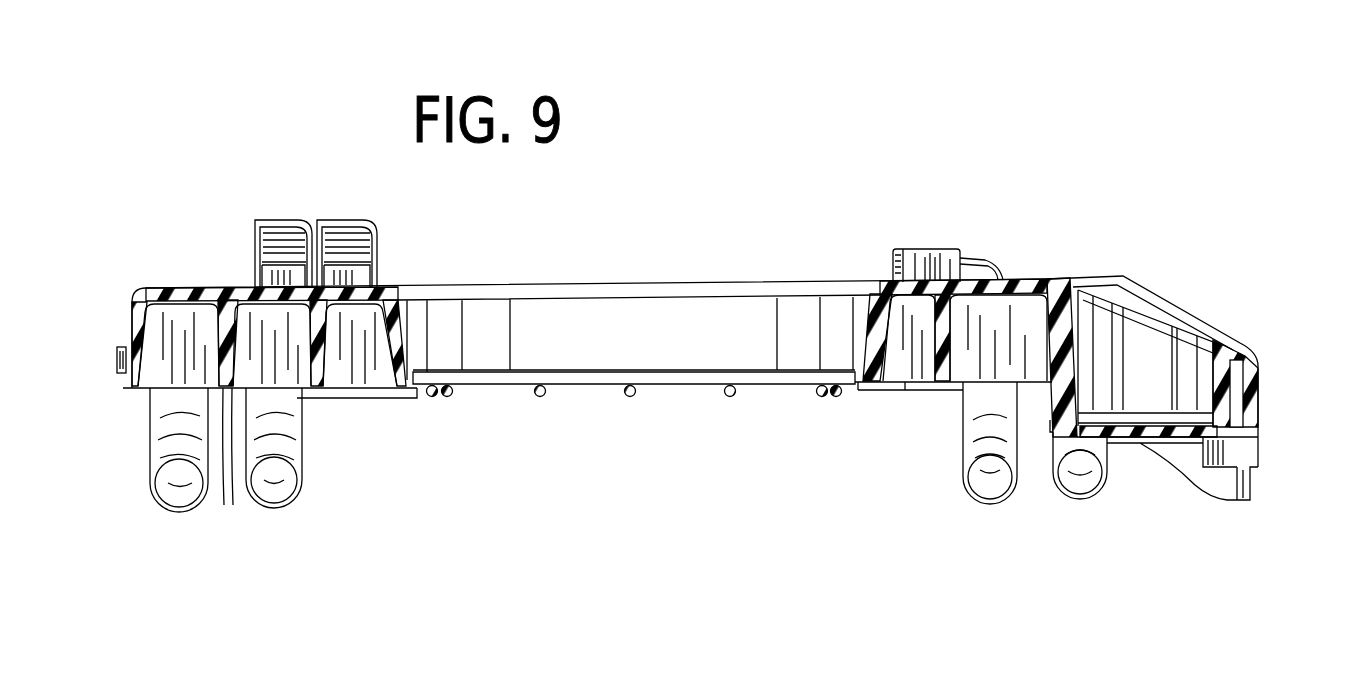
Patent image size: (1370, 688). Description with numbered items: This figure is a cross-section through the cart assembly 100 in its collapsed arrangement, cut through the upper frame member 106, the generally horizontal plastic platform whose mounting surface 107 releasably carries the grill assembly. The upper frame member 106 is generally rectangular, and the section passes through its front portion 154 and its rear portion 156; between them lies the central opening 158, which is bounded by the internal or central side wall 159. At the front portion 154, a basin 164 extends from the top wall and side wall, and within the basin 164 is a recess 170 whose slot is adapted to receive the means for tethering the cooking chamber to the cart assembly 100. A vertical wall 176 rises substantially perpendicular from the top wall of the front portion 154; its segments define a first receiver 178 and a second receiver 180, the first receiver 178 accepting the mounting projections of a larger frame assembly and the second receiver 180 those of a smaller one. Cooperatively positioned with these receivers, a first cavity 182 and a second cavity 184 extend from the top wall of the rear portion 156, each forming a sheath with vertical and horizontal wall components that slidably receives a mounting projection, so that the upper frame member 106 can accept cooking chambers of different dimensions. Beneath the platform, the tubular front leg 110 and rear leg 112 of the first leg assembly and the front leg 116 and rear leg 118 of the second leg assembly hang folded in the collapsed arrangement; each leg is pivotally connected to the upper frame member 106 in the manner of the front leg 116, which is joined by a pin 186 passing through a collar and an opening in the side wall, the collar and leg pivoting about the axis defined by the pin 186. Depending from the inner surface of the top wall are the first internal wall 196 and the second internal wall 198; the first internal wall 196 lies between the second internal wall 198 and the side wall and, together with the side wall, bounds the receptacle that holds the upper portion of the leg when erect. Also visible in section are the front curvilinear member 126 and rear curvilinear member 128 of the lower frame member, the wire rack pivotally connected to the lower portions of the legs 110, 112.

The cart assembly 100 is at (1108, 130).
The upper frame member 106 is at (648, 387).
The mounting surface 107 is at (212, 290).
The front leg 110 is at (1007, 425).
The rear leg 112 is at (282, 477).
The front leg 116 is at (1087, 483).
The rear leg 118 is at (182, 480).
The front curvilinear member 126 is at (847, 392).
The rear curvilinear member 128 is at (390, 398).
The front portion 154 is at (1027, 273).
The rear portion 156 is at (167, 292).
The central opening 158 is at (643, 341).
The central side wall 159 is at (400, 320).
The basin 164 is at (1258, 368).
The recess 170 is at (1147, 357).
The vertical wall 176 is at (897, 253).
The first receiver 178 is at (973, 265).
The second receiver 180 is at (933, 260).
The first cavity 182 is at (282, 248).
The second cavity 184 is at (348, 252).
The pin 186 is at (117, 360).
The first internal wall 196 is at (228, 440).
The second internal wall 198 is at (322, 398).